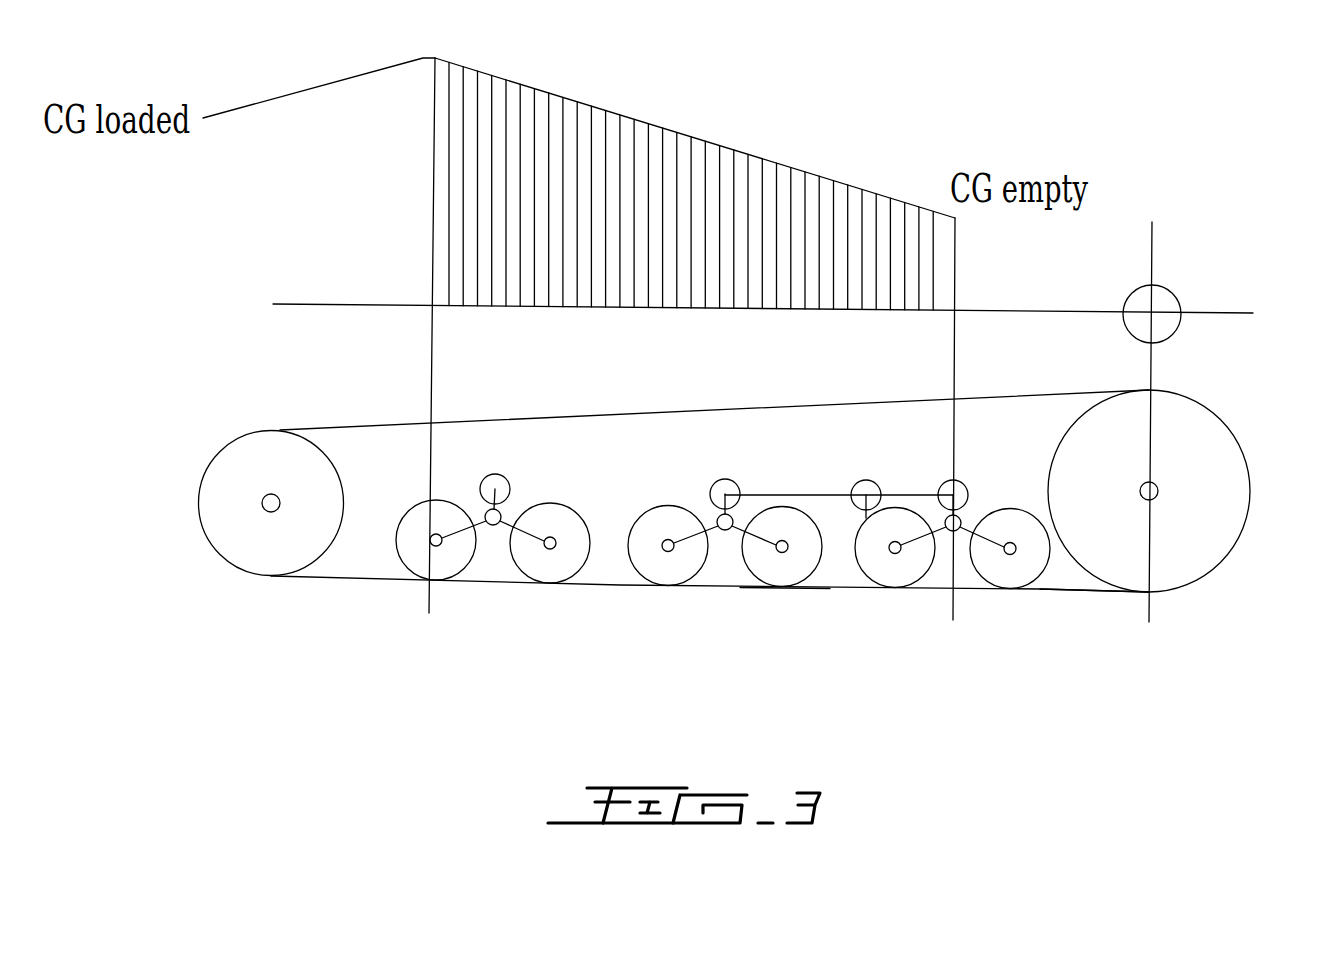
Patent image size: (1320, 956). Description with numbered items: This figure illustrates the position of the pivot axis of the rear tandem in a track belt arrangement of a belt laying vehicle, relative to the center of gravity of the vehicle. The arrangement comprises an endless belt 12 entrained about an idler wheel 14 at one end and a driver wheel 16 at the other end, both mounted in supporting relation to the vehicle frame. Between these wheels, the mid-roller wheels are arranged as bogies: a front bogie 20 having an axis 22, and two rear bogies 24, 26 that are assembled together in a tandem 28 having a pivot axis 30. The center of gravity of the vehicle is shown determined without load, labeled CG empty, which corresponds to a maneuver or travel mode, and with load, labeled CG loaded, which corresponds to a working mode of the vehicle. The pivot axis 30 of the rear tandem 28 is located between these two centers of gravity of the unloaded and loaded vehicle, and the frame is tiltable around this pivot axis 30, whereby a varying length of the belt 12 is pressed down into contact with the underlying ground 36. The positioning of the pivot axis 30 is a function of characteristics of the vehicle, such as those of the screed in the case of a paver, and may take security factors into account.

The endless belt 12 is at (985, 405).
The idler wheel 14 is at (217, 498).
The driver wheel 16 is at (1222, 490).
The front bogie 20 is at (493, 510).
The axis 22 is at (497, 474).
The rear bogie 24 is at (656, 592).
The rear bogie 26 is at (916, 618).
The tandem 28 is at (783, 652).
The pivot axis 30 is at (866, 480).
The underlying ground 36 is at (1083, 593).